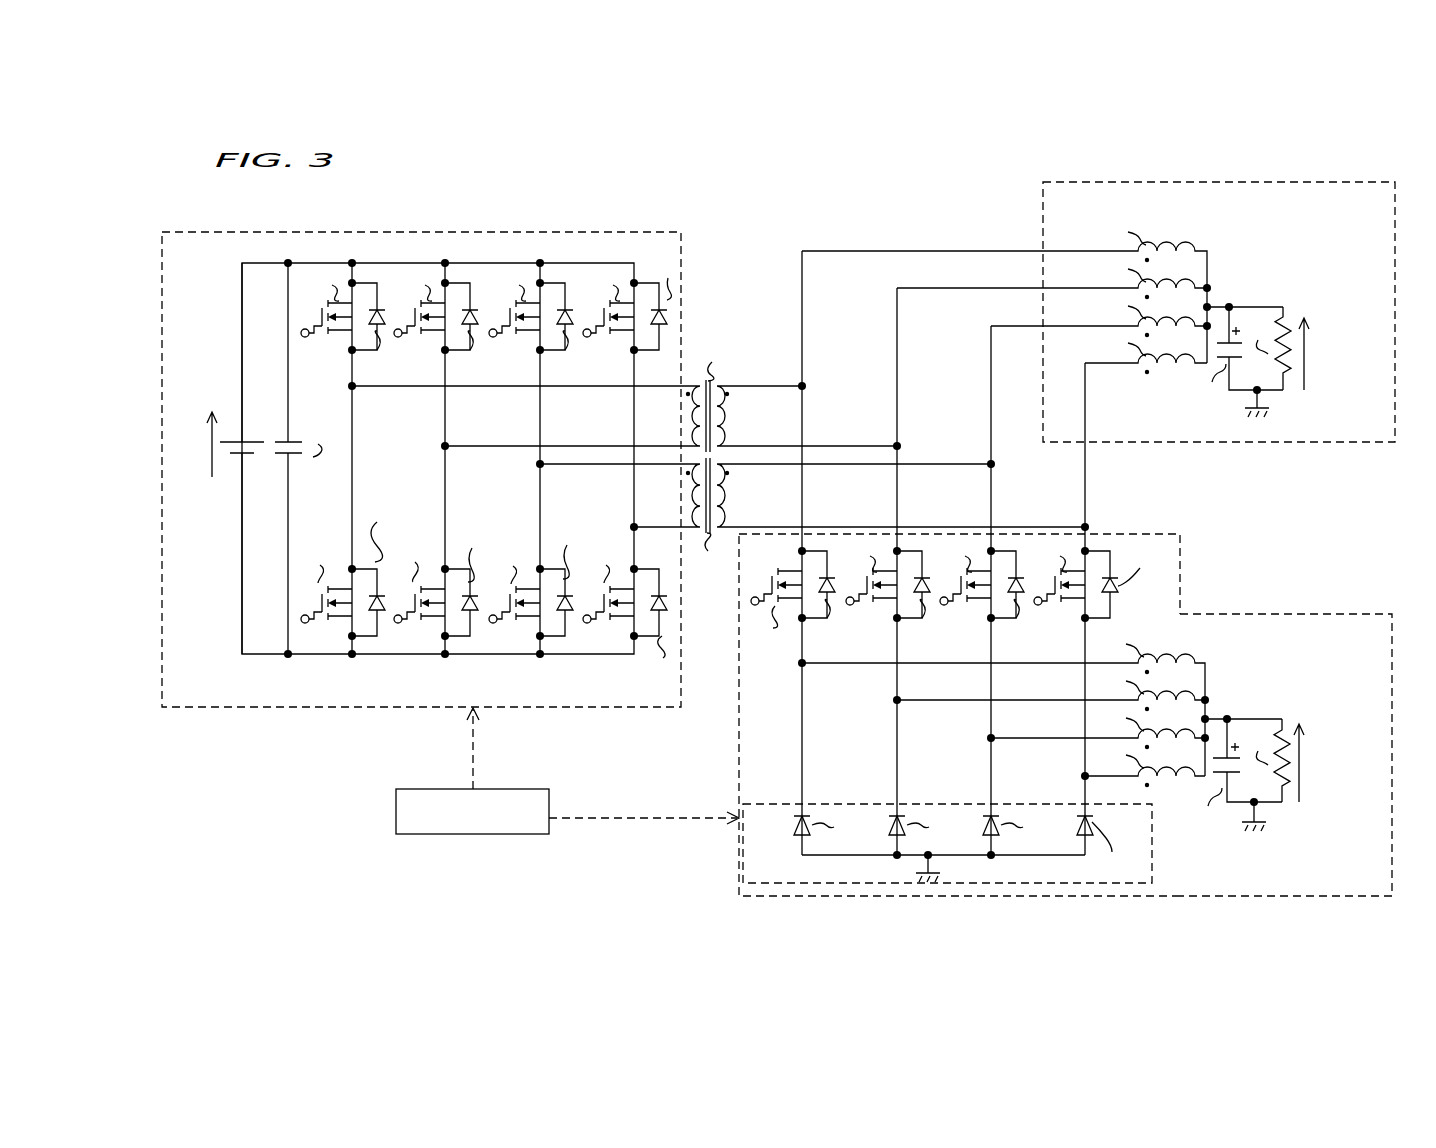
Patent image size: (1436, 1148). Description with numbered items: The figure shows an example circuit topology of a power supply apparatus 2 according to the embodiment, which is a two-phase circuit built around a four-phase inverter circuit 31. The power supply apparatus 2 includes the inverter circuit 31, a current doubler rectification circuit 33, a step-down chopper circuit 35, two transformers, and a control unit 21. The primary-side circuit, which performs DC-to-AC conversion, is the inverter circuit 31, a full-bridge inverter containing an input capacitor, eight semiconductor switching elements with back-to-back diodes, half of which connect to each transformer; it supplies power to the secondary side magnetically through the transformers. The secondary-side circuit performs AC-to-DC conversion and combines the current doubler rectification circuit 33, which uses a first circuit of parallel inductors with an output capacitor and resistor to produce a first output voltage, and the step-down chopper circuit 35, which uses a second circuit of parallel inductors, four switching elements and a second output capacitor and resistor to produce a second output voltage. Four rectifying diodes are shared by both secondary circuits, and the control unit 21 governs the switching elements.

The power supply apparatus 2 is at (715, 200).
The control unit 21 is at (392, 824).
The inverter circuit 31 is at (588, 707).
The current doubler rectification circuit 33 is at (1362, 443).
The step-down chopper circuit 35 is at (1275, 613).